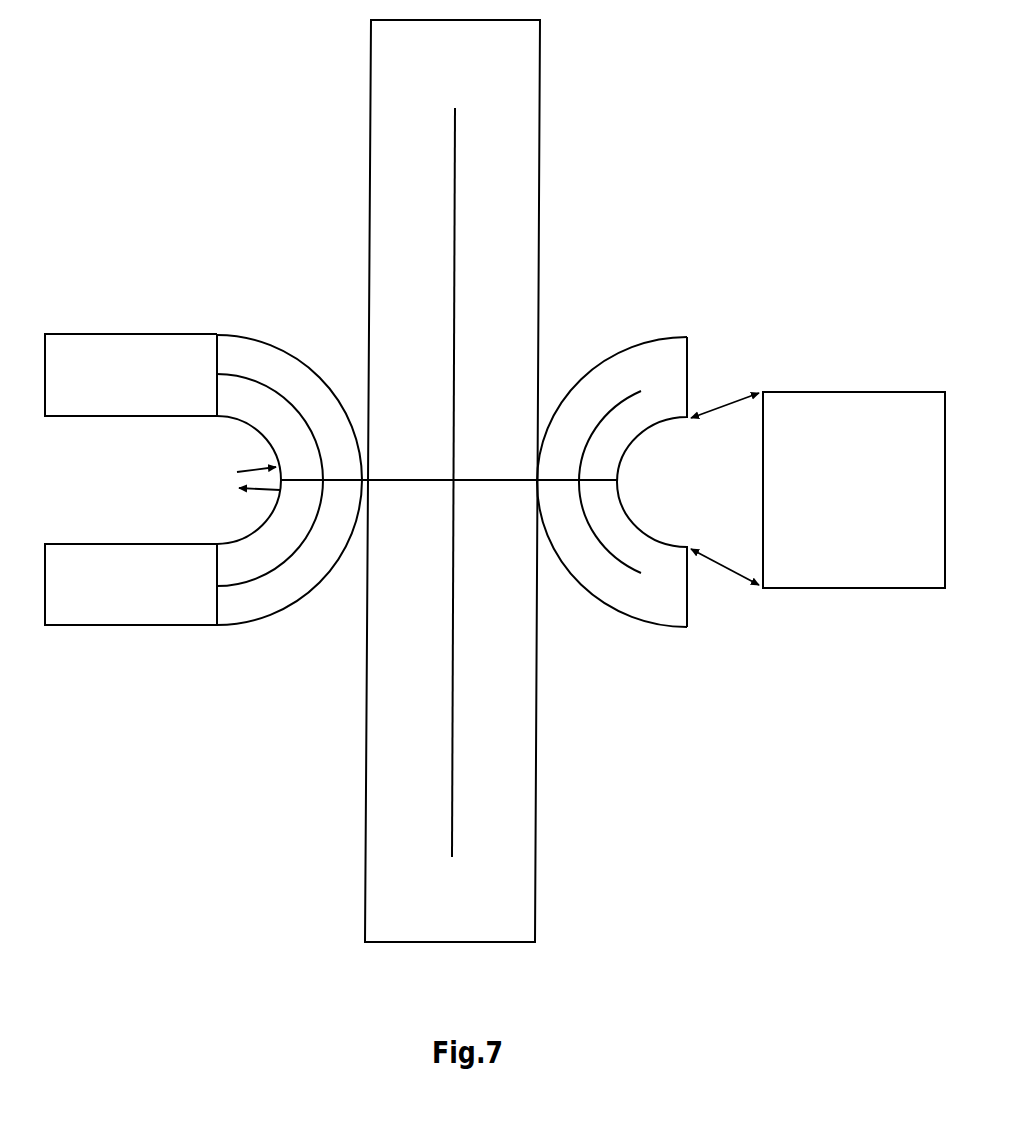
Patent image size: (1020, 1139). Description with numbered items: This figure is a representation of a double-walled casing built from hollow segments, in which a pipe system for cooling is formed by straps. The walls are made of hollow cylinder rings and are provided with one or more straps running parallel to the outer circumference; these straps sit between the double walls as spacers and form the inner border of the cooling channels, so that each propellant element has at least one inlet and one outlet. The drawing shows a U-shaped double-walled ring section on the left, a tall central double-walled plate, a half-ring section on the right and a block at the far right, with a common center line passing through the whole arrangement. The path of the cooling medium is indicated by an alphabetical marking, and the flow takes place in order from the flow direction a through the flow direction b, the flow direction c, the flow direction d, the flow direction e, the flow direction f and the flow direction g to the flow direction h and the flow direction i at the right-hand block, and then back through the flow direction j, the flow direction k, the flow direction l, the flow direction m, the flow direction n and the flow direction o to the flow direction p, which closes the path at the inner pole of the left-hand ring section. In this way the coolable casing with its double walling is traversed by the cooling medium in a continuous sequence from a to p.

The flow direction a is at (262, 448).
The flow direction b is at (217, 374).
The flow direction c is at (289, 407).
The flow direction d is at (455, 247).
The flow direction e is at (495, 456).
The flow direction f is at (612, 409).
The flow direction g is at (639, 409).
The flow direction h is at (853, 500).
The flow direction i is at (854, 537).
The flow direction j is at (639, 554).
The flow direction k is at (612, 554).
The flow direction l is at (493, 503).
The flow direction m is at (404, 502).
The flow direction n is at (289, 552).
The flow direction o is at (217, 586).
The flow direction p is at (262, 512).